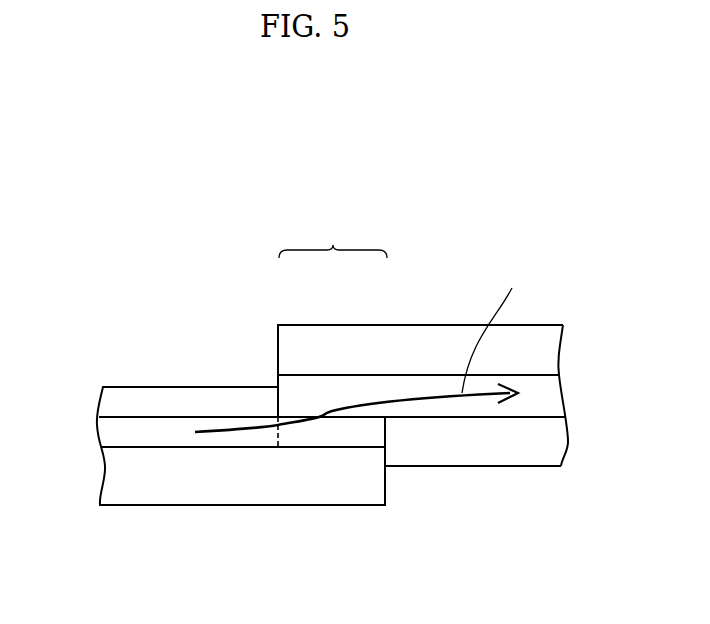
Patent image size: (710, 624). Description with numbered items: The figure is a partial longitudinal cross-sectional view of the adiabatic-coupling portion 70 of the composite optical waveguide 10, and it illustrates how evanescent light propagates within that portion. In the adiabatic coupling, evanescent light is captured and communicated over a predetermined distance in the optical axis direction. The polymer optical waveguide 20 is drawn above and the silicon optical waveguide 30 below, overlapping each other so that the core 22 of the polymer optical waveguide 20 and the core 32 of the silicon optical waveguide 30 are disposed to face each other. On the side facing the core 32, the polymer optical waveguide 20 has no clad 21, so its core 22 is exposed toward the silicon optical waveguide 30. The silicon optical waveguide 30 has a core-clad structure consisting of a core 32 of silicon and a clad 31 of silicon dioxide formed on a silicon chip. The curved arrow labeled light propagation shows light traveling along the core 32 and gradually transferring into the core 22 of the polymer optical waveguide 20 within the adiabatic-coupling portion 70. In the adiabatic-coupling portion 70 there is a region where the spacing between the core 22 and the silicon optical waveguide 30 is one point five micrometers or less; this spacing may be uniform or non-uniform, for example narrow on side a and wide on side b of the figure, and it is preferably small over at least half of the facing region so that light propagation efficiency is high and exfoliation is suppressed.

The composite optical waveguide 10 is at (397, 222).
The polymer optical waveguide 20 is at (429, 301).
The clad of polymer optical waveguide 21 is at (330, 337).
The core of polymer optical waveguide 22 is at (312, 393).
The silicon optical waveguide 30 is at (141, 522).
The clad of silicon optical waveguide 31 is at (142, 393).
The core of silicon optical waveguide 32 is at (110, 435).
The adiabatic-coupling portion 70 is at (333, 245).
The side a is at (280, 458).
The side b is at (395, 446).